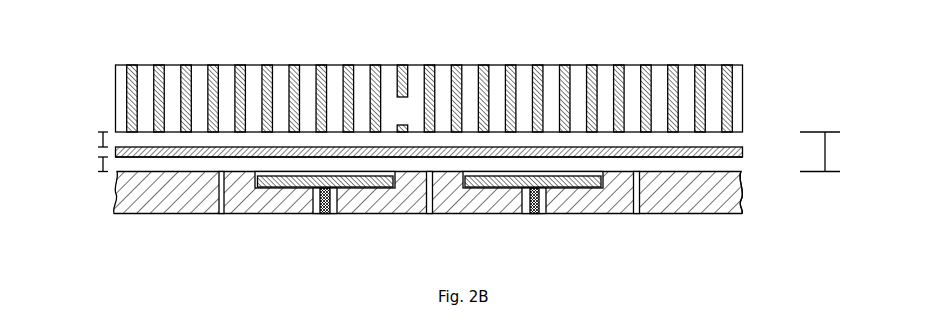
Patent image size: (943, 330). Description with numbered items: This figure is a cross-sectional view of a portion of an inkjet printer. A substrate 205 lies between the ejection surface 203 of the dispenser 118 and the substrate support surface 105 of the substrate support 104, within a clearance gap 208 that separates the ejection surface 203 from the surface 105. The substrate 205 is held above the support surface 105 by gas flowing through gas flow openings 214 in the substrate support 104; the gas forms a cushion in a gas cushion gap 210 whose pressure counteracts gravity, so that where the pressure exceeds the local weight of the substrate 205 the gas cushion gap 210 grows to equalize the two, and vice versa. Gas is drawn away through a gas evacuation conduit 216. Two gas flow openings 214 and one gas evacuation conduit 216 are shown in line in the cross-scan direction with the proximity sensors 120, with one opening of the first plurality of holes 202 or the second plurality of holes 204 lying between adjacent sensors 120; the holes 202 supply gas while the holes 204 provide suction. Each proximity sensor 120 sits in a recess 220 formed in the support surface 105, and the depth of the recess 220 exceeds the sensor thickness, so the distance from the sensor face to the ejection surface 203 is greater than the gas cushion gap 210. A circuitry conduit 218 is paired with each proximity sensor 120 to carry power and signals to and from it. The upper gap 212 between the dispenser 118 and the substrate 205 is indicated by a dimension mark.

The substrate support 104 is at (115, 188).
The substrate support surface 105 is at (742, 183).
The dispenser 118 is at (471, 89).
The proximity sensors 120 is at (303, 188).
The first plurality of holes 202 is at (637, 171).
The ejection surface 203 is at (725, 133).
The second plurality of holes 204 is at (428, 177).
The substrate 205 is at (115, 152).
The clearance gap 208 is at (825, 152).
The gas cushion gap 210 is at (102, 167).
The upper gap 212 is at (102, 142).
The gas flow openings 214 is at (220, 214).
The gas evacuation conduit 216 is at (428, 215).
The circuitry conduit 218 is at (327, 214).
The recess 220 is at (362, 173).